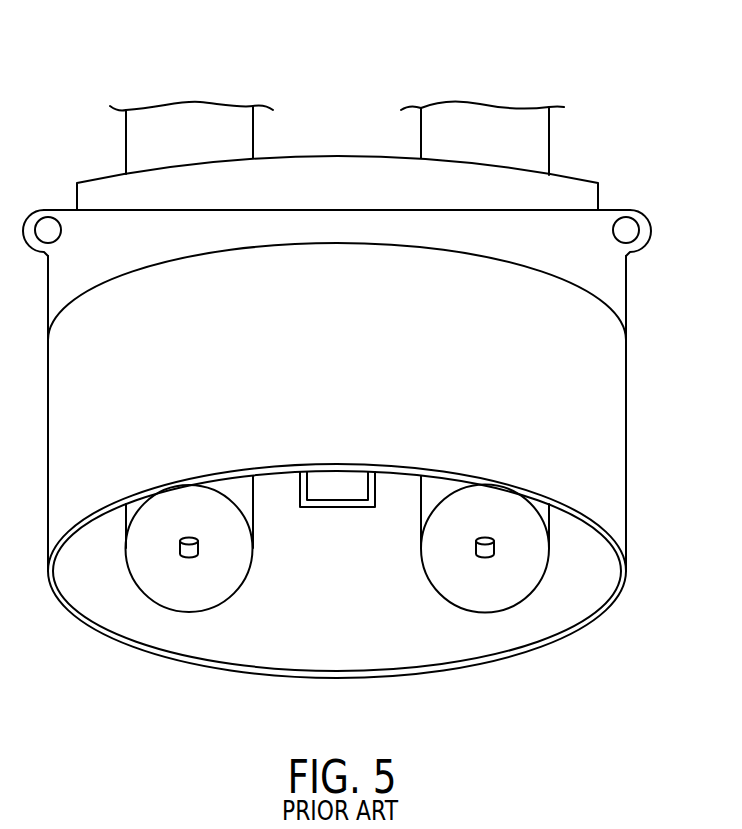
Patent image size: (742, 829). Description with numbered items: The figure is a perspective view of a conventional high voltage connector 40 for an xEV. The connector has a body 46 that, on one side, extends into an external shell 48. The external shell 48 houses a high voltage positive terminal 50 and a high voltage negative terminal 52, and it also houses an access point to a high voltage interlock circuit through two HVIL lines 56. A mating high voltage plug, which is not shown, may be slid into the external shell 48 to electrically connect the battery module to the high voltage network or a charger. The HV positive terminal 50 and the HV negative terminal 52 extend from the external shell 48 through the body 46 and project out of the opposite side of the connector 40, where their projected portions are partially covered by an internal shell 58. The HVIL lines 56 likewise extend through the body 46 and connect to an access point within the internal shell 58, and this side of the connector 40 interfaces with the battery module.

The high voltage connector 40 is at (641, 672).
The body 46 is at (585, 257).
The external shell 48 is at (608, 487).
The HV positive terminal 50 is at (195, 120).
The HV negative terminal 52 is at (479, 122).
The HVIL lines 56 is at (337, 488).
The internal shell 58 is at (105, 193).